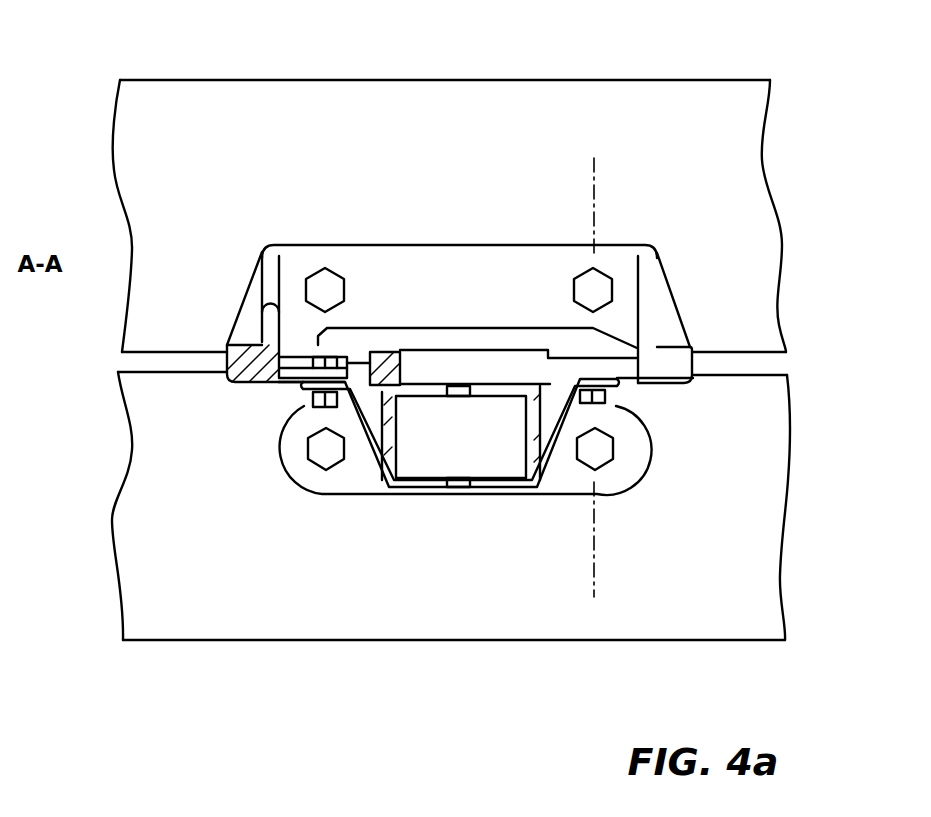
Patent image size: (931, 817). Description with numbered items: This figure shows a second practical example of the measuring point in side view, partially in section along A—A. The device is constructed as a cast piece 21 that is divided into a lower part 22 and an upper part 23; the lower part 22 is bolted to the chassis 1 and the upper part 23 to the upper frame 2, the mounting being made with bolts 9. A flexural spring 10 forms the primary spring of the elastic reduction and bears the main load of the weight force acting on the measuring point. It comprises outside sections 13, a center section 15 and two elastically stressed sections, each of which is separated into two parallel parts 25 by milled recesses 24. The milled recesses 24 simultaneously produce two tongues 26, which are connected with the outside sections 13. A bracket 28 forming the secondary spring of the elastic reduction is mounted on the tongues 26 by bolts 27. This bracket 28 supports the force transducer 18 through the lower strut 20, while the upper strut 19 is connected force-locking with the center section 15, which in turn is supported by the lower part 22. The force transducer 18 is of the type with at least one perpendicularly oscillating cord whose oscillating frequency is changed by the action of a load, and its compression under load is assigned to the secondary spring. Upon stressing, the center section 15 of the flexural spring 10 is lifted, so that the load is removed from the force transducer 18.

The chassis 1 is at (747, 617).
The upper frame 2 is at (737, 137).
The bolts 9 is at (325, 287).
The flexural spring 10 is at (467, 352).
The outside sections 13 is at (228, 343).
The center section 15 is at (430, 363).
The force transducer 18 is at (460, 442).
The upper strut 19 is at (455, 393).
The lower strut 20 is at (458, 487).
The cast piece 21 is at (693, 367).
The lower part 22 is at (350, 475).
The upper part 23 is at (367, 265).
The milled recesses 24 is at (357, 372).
The parallel parts 25 is at (312, 398).
The tongues 26 is at (305, 378).
The bolts 27 is at (316, 356).
The bracket 28 is at (543, 490).